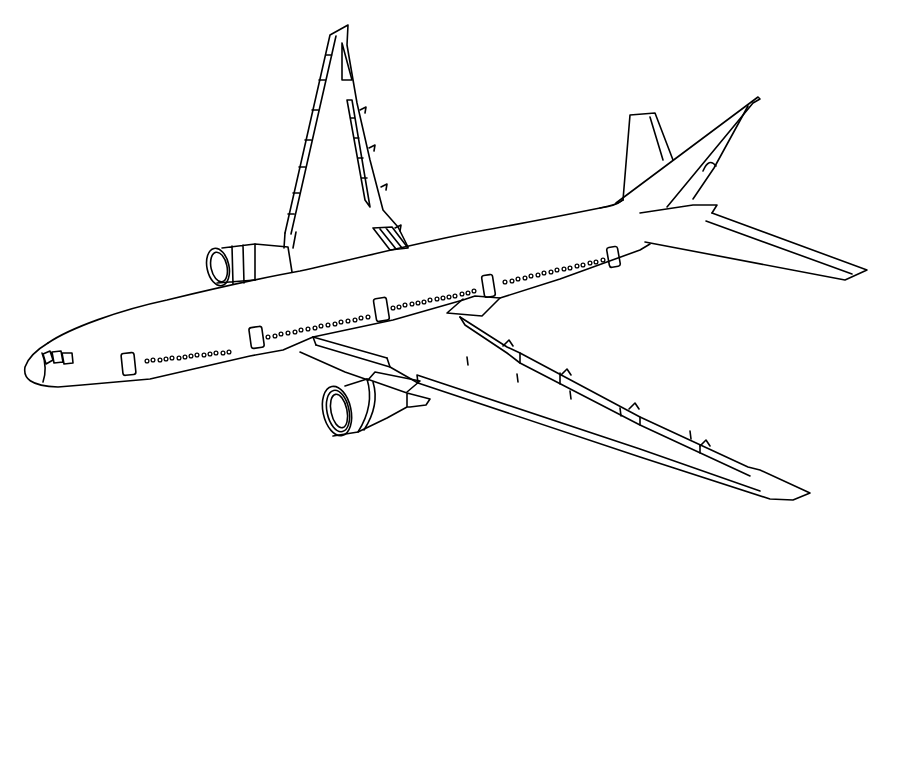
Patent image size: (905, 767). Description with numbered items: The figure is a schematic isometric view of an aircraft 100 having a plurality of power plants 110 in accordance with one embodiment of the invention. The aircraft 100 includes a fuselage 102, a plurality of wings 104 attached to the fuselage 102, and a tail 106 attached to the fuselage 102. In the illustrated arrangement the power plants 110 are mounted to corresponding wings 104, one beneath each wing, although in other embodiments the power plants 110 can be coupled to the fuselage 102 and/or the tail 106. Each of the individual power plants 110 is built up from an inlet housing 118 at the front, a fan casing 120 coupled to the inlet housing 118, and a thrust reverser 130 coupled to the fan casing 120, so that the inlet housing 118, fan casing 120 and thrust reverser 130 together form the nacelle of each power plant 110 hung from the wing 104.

The aircraft 100 is at (57, 190).
The fuselage 102 is at (163, 373).
The wings 104 is at (343, 153).
The tail 106 is at (710, 132).
The power plants 110 is at (205, 207).
The inlet housing 118 is at (212, 258).
The fan casing 120 is at (231, 244).
The thrust reverser 130 is at (270, 255).